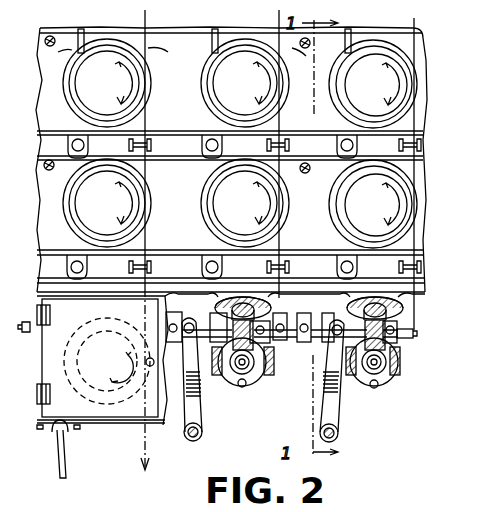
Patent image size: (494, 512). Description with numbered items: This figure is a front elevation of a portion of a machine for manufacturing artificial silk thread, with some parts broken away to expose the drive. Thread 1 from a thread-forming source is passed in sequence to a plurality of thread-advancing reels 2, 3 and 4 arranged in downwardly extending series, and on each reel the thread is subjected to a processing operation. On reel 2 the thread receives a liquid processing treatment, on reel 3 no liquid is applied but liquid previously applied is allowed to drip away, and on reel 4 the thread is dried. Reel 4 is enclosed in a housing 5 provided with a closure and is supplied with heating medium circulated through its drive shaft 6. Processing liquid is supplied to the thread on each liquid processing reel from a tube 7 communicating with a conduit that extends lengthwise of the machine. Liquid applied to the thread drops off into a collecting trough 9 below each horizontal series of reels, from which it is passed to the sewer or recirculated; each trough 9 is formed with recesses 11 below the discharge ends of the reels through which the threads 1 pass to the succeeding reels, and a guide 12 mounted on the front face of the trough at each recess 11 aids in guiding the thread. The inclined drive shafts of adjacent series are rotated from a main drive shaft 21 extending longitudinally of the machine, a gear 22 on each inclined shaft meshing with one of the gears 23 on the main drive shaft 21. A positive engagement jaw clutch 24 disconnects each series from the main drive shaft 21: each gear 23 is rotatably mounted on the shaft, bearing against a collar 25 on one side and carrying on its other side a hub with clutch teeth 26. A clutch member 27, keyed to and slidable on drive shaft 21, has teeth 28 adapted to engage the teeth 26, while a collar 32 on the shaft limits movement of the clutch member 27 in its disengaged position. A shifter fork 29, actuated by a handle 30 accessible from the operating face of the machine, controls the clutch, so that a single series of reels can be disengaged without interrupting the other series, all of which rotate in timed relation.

The thread 1 is at (414, 53).
The thread-advancing reel 2 is at (240, 83).
The thread-advancing reel 3 is at (240, 203).
The thread-advancing reel 4 is at (80, 392).
The housing 5 is at (55, 297).
The drive shaft 6 is at (247, 366).
The tube 7 is at (345, 52).
The collecting trough 9 is at (311, 254).
The recess 11 is at (148, 130).
The guide 12 is at (151, 148).
The main drive shaft 21 is at (414, 333).
The gear 22 is at (222, 295).
The gear 23 is at (274, 352).
The jaw clutch 24 is at (360, 293).
The collar 25 is at (295, 318).
The clutch teeth 26 is at (212, 313).
The clutch member 27 is at (165, 341).
The teeth 28 is at (200, 378).
The shifter fork 29 is at (199, 402).
The handle 30 is at (67, 453).
The collar 32 is at (165, 314).